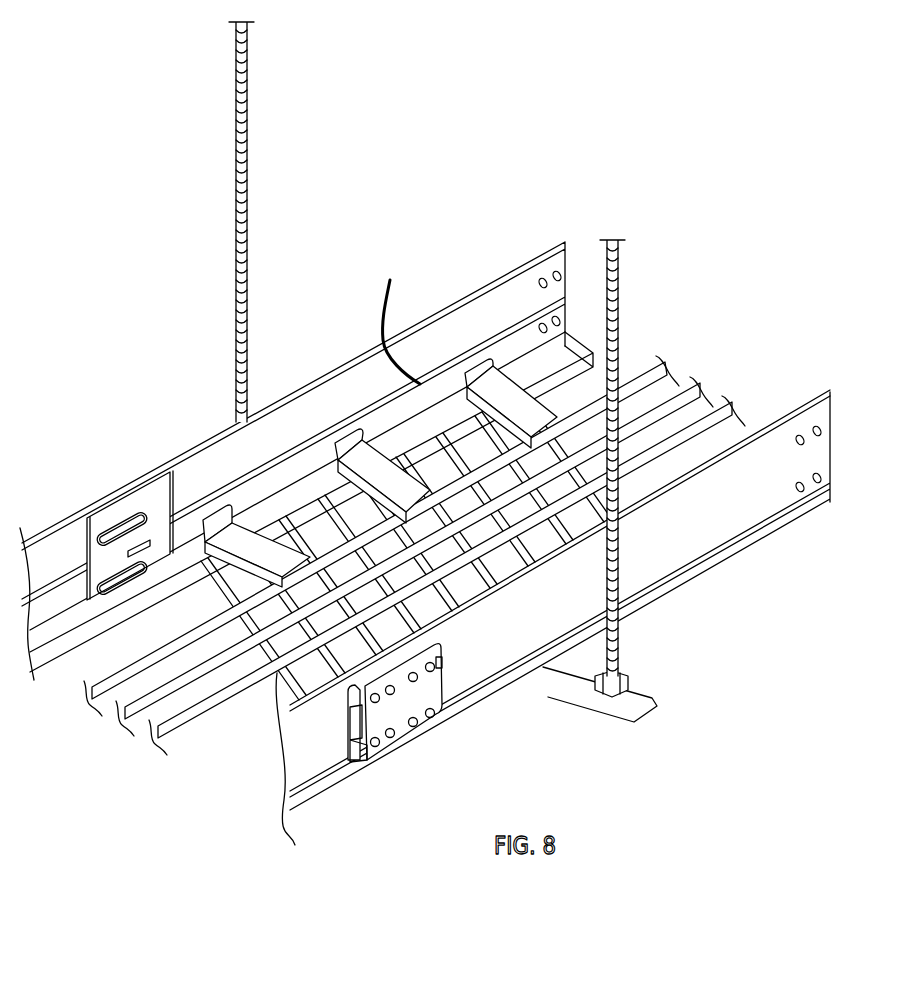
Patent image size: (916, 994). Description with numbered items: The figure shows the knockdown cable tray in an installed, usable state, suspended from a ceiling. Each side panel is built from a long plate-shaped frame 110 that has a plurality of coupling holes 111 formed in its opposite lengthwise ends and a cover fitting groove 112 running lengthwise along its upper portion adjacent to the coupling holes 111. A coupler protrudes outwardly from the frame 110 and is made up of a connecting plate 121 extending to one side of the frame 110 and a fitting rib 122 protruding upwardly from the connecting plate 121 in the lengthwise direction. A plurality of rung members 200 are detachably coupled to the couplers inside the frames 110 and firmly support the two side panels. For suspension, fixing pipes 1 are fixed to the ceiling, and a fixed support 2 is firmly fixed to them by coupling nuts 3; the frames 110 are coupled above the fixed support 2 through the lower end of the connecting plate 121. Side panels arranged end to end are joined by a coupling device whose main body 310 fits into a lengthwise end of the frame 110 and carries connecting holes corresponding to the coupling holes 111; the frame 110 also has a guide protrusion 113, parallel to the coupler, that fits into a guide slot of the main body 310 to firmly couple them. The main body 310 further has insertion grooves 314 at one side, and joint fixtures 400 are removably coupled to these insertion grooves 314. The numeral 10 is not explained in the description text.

The fixing pipe 1 is at (238, 272).
The fixed support 2 is at (642, 716).
The coupling nut 3 is at (633, 688).
The cable ladder 10 is at (197, 707).
The frame 110 is at (343, 367).
The coupling hole 111 is at (558, 272).
The cover fitting groove 112 is at (830, 413).
The guide protrusion 113 is at (397, 314).
The connecting plate 121 is at (580, 352).
The fitting rib 122 is at (568, 336).
The rung member 200 is at (513, 393).
The main body 310 is at (152, 478).
The insertion groove 314 is at (353, 722).
The joint fixture 400 is at (355, 762).